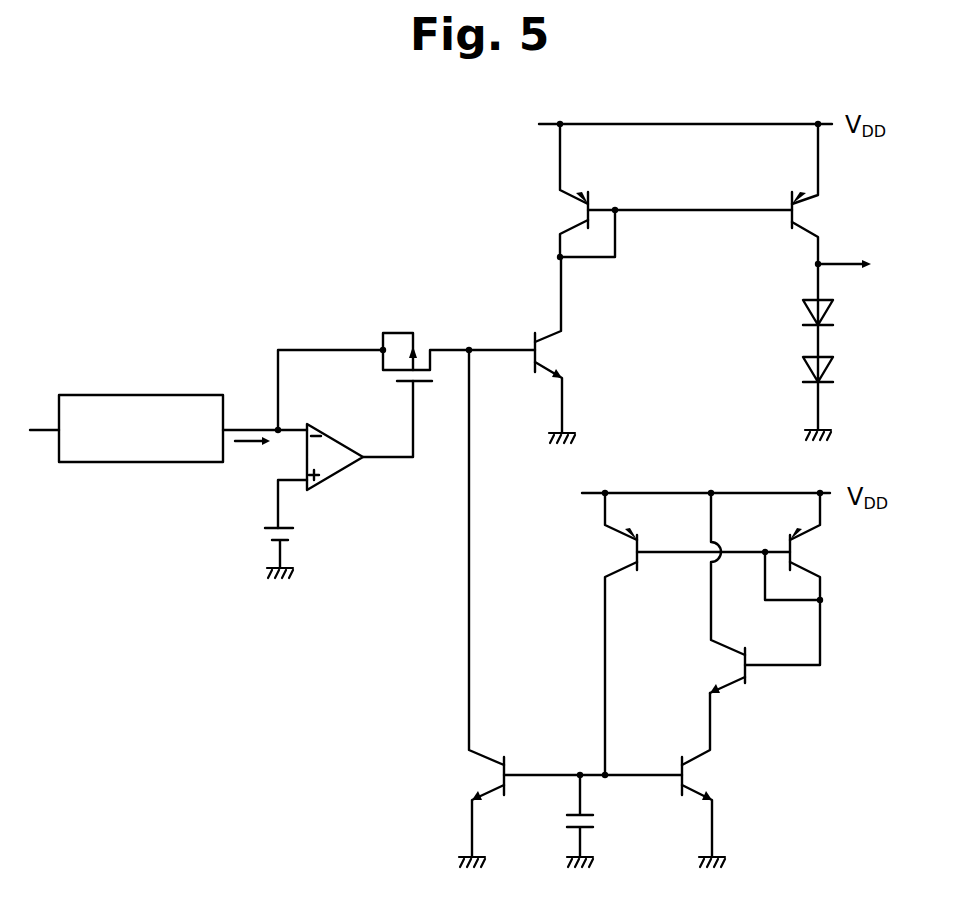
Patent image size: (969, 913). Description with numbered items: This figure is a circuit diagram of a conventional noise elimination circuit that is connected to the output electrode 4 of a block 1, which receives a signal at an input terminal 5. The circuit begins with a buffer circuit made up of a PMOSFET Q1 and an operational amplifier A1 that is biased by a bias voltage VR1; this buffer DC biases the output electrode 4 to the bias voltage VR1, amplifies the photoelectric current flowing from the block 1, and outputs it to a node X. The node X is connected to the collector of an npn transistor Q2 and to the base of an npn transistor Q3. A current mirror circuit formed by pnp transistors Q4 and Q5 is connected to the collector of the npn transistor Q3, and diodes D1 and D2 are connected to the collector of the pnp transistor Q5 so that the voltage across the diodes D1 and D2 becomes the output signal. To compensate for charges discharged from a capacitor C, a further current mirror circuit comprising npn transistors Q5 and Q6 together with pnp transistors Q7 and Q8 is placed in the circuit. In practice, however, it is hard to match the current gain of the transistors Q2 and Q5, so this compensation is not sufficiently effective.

The current source block 1 is at (189, 383).
The output electrode 4 is at (246, 428).
The input terminal 5 is at (31, 428).
The operational amplifier A1 is at (340, 473).
The bias voltage VR1 is at (300, 552).
The PMOSFET Q1 is at (415, 334).
The npn transistor Q2 is at (490, 772).
The npn transistor Q3 is at (548, 353).
The pnp transistor Q4 is at (565, 213).
The pnp transistor Q5 is at (812, 218).
The npn transistor Q6 is at (735, 665).
The pnp transistor Q7 is at (620, 566).
The pnp transistor Q8 is at (800, 552).
The diode D1 is at (834, 311).
The diode D2 is at (834, 368).
The capacitor C is at (592, 821).